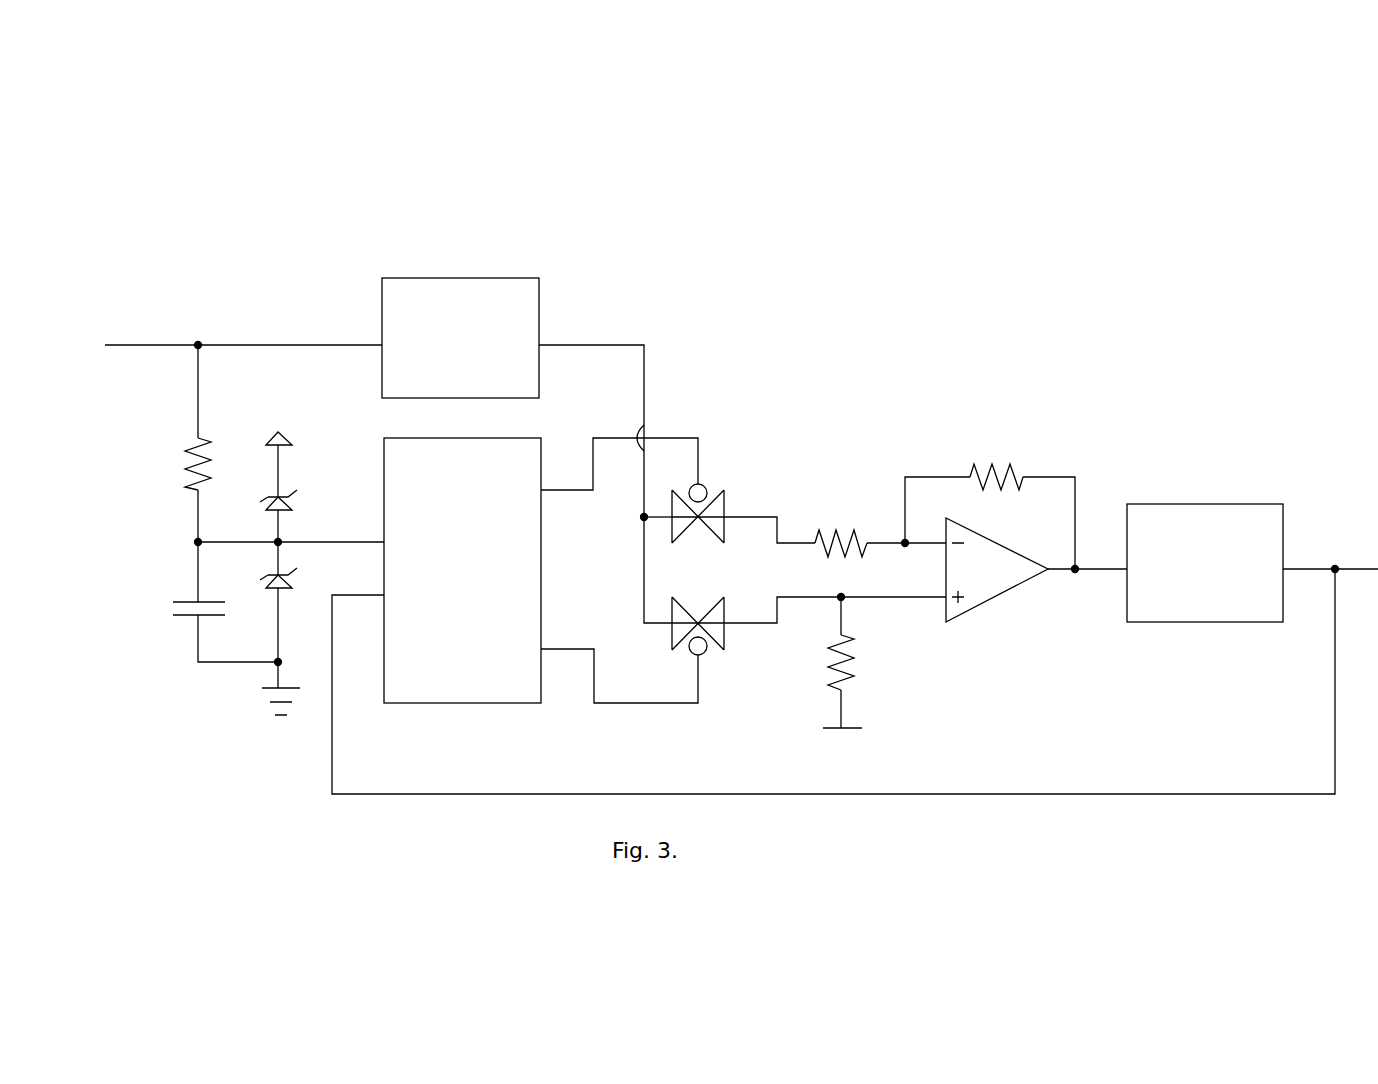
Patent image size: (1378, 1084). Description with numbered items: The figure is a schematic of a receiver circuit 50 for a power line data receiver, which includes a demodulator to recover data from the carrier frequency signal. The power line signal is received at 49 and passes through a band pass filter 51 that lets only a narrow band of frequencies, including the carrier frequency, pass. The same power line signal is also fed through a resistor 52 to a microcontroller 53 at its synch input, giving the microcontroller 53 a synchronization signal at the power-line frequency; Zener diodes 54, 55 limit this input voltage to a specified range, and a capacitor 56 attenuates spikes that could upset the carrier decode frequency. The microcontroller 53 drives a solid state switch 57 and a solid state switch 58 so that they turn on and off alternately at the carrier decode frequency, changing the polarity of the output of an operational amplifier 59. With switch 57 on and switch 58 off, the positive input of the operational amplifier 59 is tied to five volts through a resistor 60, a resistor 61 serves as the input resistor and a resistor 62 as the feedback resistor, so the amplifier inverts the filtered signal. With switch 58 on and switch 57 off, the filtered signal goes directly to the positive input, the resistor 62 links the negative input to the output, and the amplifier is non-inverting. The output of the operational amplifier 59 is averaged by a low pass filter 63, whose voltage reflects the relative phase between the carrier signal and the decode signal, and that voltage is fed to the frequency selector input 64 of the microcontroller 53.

The power line signal input 49 is at (243, 331).
The receiver circuit 50 is at (793, 312).
The band pass filter 51 is at (465, 262).
The resistor 52 is at (168, 465).
The microcontroller 53 is at (427, 711).
The Zener diode 54 is at (297, 470).
The Zener diode 55 is at (273, 597).
The capacitor 56 is at (162, 608).
The solid state switch 57 is at (713, 472).
The solid state switch 58 is at (735, 645).
The operational amplifier 59 is at (1010, 603).
The resistor 60 is at (867, 660).
The resistor 61 is at (825, 520).
The feedback resistor 62 is at (995, 450).
The low pass filter 63 is at (1198, 488).
The frequency selector input 64 is at (332, 587).